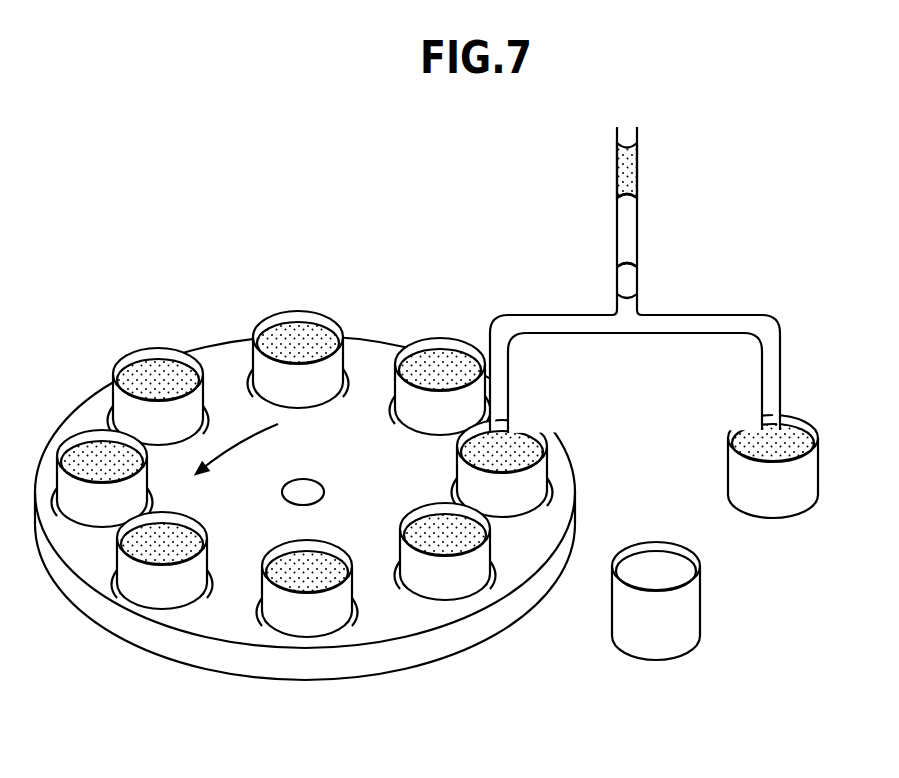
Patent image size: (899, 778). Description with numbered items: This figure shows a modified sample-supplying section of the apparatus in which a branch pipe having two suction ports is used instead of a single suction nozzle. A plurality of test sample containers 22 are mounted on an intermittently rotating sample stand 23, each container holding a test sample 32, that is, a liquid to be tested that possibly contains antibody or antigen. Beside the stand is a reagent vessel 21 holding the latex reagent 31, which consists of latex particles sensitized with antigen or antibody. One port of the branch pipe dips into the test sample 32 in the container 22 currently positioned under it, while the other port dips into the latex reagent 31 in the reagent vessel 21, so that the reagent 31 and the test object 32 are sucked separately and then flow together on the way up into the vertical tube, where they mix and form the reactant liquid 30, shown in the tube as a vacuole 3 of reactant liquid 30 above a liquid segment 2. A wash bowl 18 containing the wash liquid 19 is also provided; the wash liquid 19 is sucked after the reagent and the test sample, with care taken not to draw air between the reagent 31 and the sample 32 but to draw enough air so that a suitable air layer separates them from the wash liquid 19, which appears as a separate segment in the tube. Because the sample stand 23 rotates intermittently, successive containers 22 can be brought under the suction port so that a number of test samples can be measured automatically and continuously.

The liquid segment 2 is at (630, 222).
The vacuole 3 is at (603, 157).
The wash bowl 18 is at (703, 596).
The wash liquid 19 is at (655, 568).
The reagent vessel 21 is at (819, 464).
The test sample container 22 is at (275, 313).
The sample stand 23 is at (393, 610).
The reactant liquid 30 is at (632, 180).
The latex reagent 31 is at (748, 437).
The test sample 32 is at (503, 445).